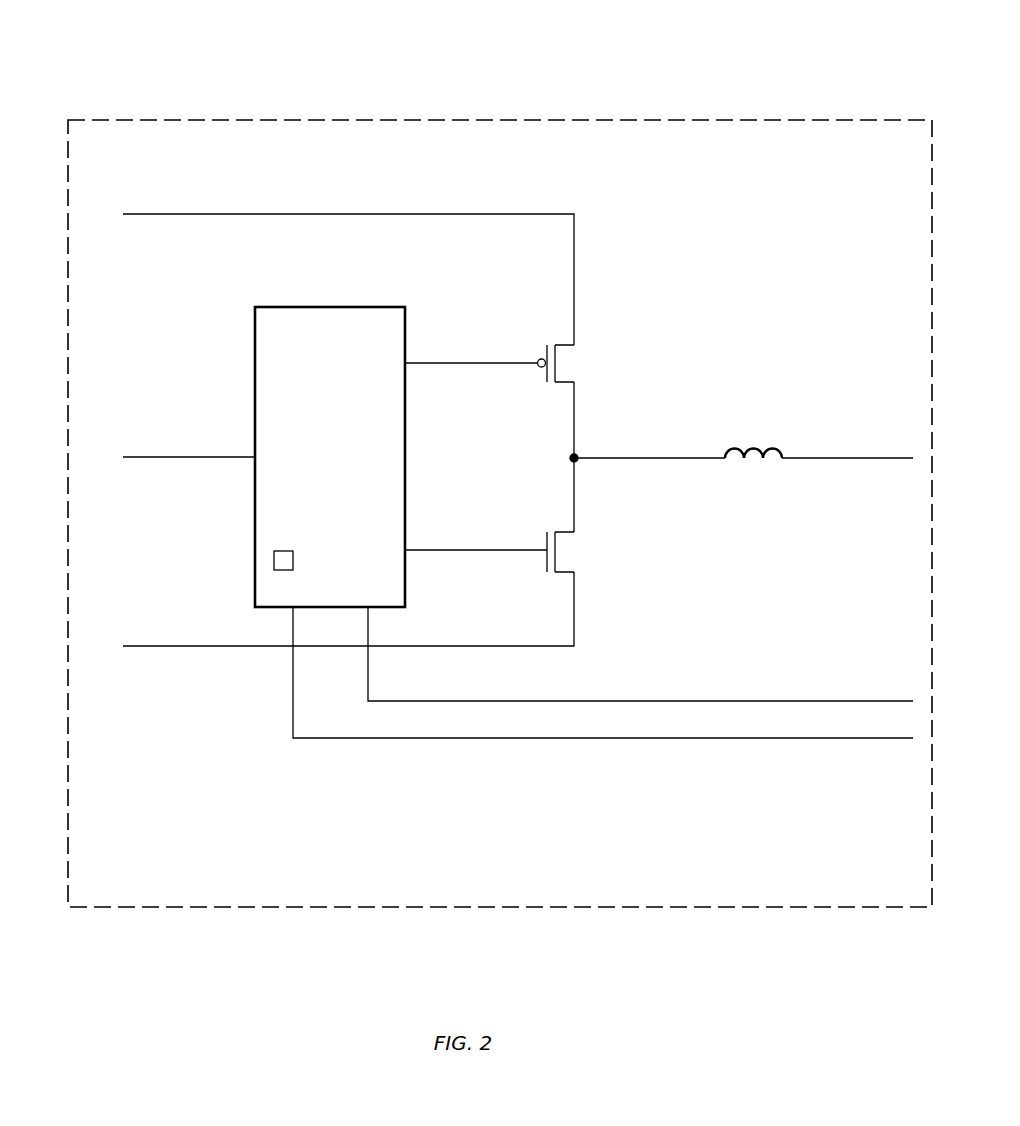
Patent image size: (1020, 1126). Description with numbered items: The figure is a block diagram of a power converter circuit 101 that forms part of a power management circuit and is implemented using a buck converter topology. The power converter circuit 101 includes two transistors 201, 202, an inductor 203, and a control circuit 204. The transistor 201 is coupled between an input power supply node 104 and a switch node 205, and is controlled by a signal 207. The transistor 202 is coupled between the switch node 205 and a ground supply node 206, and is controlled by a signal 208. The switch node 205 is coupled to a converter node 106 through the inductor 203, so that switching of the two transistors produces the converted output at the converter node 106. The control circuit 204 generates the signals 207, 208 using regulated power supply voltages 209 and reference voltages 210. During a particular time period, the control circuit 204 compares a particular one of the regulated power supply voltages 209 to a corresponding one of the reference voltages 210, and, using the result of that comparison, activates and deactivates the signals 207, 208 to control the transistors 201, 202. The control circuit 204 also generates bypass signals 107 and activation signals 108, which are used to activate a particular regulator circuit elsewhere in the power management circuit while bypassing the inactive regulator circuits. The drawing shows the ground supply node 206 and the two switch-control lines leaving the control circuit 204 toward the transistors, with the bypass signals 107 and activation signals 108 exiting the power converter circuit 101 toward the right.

The power converter circuit 101 is at (516, 120).
The input power supply node 104 is at (348, 254).
The converter node 106 is at (848, 445).
The bypass signals 107 is at (837, 663).
The activation signals 108 is at (837, 759).
The transistor 201 is at (580, 363).
The transistor 202 is at (580, 550).
The inductor 203 is at (751, 444).
The control circuit 204 is at (330, 457).
The switch node 205 is at (664, 459).
The ground supply node 206 is at (348, 621).
The signal 207 is at (462, 325).
The signal 208 is at (462, 513).
The regulated power supply voltages 209 is at (143, 420).
The reference voltages 210 is at (276, 555).